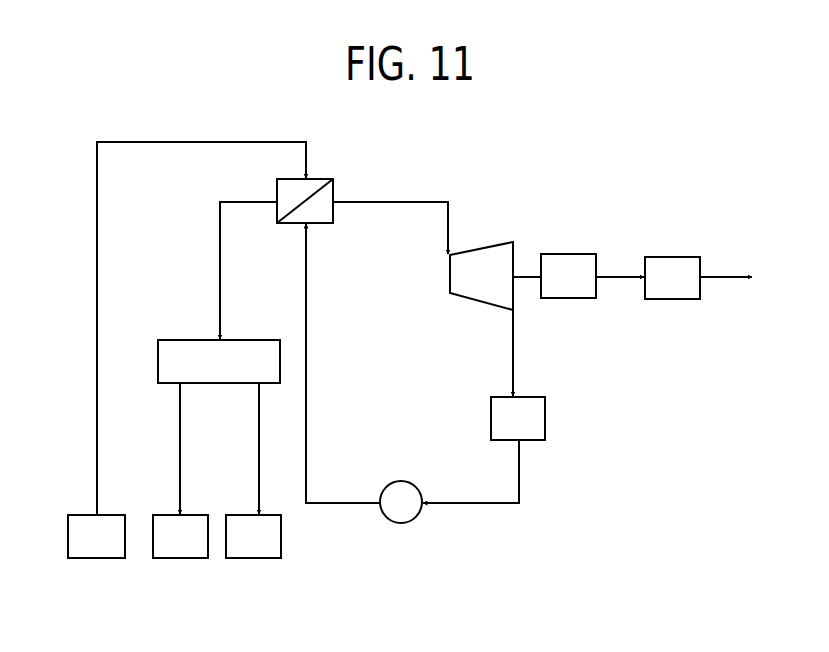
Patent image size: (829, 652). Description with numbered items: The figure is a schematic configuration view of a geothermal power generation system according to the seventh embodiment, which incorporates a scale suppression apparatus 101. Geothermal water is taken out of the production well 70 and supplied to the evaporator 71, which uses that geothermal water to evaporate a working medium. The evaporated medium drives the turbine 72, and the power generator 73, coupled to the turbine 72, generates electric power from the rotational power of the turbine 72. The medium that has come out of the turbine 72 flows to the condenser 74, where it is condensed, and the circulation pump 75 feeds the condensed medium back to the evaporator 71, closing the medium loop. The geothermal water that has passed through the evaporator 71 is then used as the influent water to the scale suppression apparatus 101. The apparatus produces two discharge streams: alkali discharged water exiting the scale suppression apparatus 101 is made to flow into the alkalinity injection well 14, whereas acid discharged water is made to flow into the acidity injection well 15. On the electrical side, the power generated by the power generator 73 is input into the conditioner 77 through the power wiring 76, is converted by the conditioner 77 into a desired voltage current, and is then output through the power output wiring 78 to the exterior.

The alkalinity injection well 14 is at (255, 558).
The acidity injection well 15 is at (182, 558).
The production well 70 is at (95, 558).
The evaporator 71 is at (323, 223).
The turbine 72 is at (493, 245).
The power generator 73 is at (582, 252).
The condenser 74 is at (528, 440).
The circulation pump 75 is at (402, 523).
The power wiring 76 is at (618, 272).
The conditioner 77 is at (682, 253).
The power output wiring 78 is at (723, 272).
The scale suppression apparatus 101 is at (200, 338).